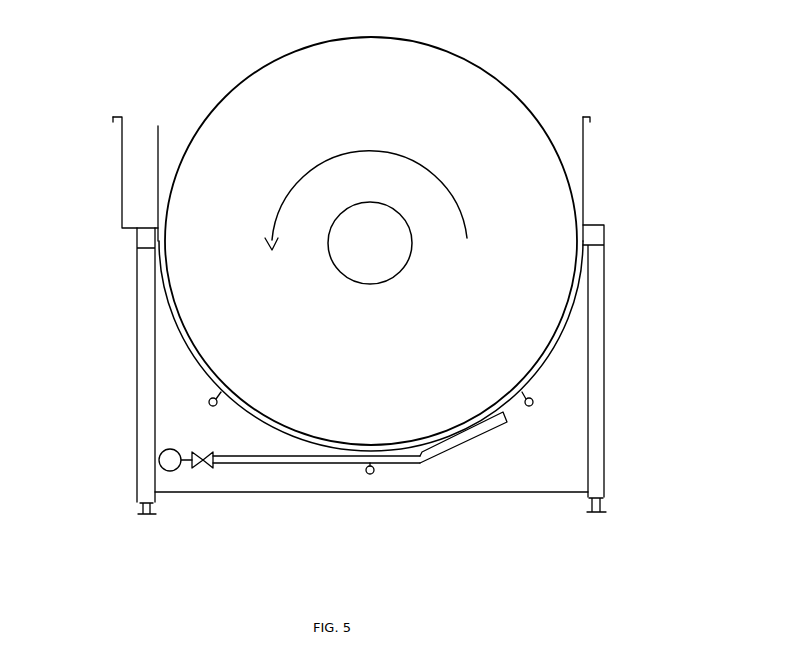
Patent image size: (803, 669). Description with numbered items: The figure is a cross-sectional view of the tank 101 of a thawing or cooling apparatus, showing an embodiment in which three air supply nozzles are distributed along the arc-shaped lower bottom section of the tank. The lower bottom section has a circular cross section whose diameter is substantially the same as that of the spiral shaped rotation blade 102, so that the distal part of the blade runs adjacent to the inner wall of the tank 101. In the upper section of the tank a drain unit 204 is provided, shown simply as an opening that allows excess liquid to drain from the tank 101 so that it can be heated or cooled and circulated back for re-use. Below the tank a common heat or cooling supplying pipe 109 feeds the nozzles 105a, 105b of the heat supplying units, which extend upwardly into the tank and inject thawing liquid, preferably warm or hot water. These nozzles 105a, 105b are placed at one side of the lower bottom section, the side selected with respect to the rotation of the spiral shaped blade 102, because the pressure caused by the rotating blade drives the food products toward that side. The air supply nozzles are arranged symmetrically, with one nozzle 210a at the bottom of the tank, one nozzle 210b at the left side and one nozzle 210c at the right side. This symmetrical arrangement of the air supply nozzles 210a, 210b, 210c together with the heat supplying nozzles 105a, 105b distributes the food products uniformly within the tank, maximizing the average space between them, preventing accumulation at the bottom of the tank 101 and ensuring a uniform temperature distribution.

The tank 101 is at (583, 150).
The spiral shaped rotation blade 102 is at (505, 81).
The drain unit 204 is at (158, 126).
The heat or cooling supplying pipe 109 is at (178, 469).
The nozzle of heat supplying unit 105a is at (425, 455).
The nozzle of heat supplying unit 105b is at (507, 421).
The air supply nozzle 210a is at (370, 462).
The air supply nozzle 210b is at (220, 396).
The air supply nozzle 210c is at (527, 397).